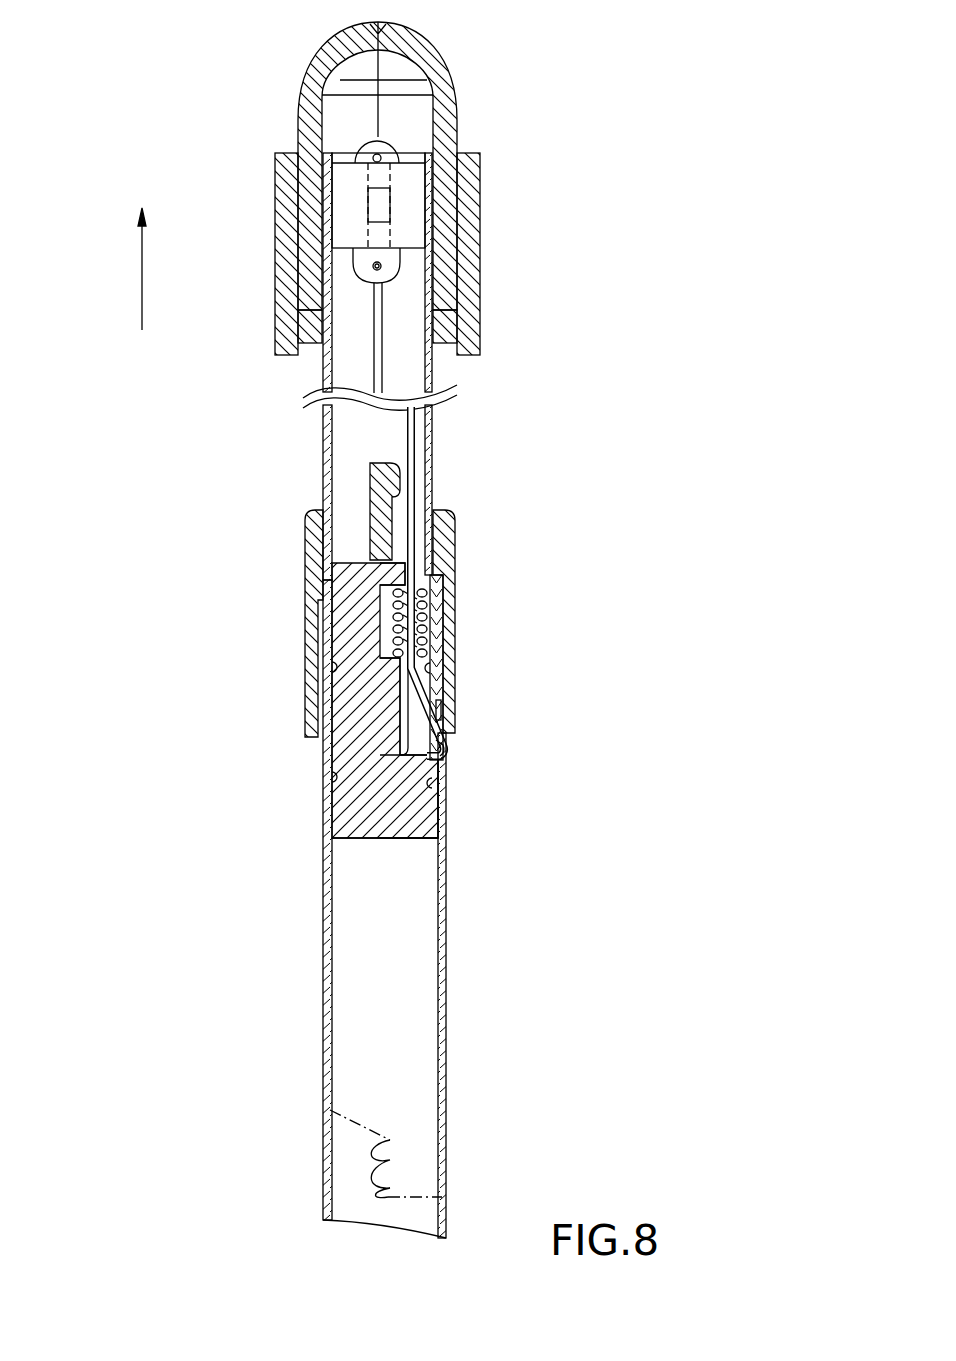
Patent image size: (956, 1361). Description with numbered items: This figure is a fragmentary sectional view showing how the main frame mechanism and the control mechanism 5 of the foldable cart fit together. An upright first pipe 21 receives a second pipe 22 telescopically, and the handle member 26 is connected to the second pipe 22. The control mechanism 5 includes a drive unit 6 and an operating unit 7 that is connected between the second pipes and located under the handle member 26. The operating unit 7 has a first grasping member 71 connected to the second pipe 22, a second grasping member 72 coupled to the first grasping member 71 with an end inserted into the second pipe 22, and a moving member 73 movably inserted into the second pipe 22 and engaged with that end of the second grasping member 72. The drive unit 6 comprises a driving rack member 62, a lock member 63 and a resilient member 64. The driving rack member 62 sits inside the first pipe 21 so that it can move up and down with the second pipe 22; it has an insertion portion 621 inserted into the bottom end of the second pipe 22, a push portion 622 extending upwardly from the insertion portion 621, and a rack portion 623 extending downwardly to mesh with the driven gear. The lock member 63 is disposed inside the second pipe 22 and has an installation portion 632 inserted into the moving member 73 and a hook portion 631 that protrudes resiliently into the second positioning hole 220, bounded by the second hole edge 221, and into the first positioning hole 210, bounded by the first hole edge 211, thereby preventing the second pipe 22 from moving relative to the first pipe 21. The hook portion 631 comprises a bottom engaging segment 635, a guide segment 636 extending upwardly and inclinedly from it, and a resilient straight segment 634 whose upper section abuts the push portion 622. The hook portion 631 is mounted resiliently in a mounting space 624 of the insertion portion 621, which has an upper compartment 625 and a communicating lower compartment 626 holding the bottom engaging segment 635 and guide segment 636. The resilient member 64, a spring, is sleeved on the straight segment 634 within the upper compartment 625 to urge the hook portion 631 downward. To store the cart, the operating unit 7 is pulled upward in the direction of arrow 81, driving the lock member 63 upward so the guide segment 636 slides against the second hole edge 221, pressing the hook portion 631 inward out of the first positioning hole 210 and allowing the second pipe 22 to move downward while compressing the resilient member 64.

The handle member 26 is at (417, 35).
The moving member 73 is at (410, 188).
The second grasping member 72 is at (373, 202).
The first grasping member 71 is at (477, 282).
The operating unit 7 is at (438, 245).
The arrow 81 is at (142, 273).
The installation portion 632 is at (373, 267).
The lock member 63 is at (366, 372).
The second pipe 22 is at (428, 425).
The resilient straight segment 634 is at (380, 583).
The push portion 622 is at (393, 477).
The mounting space 624 is at (291, 623).
The upper compartment 625 is at (388, 619).
The lower compartment 626 is at (393, 693).
The guide segment 636 is at (395, 712).
The hook portion 631 is at (385, 729).
The bottom engaging segment 635 is at (402, 793).
The resilient member 64 is at (440, 609).
The second hole edge 221 is at (437, 688).
The first positioning hole 210 is at (441, 709).
The first hole edge 211 is at (447, 750).
The second positioning hole 220 is at (435, 784).
The insertion portion 621 is at (410, 862).
The control mechanism 5 is at (118, 810).
The drive unit 6 is at (180, 805).
The driving rack member 62 is at (352, 958).
The first pipe 21 is at (322, 1080).
The rack portion 623 is at (390, 1157).